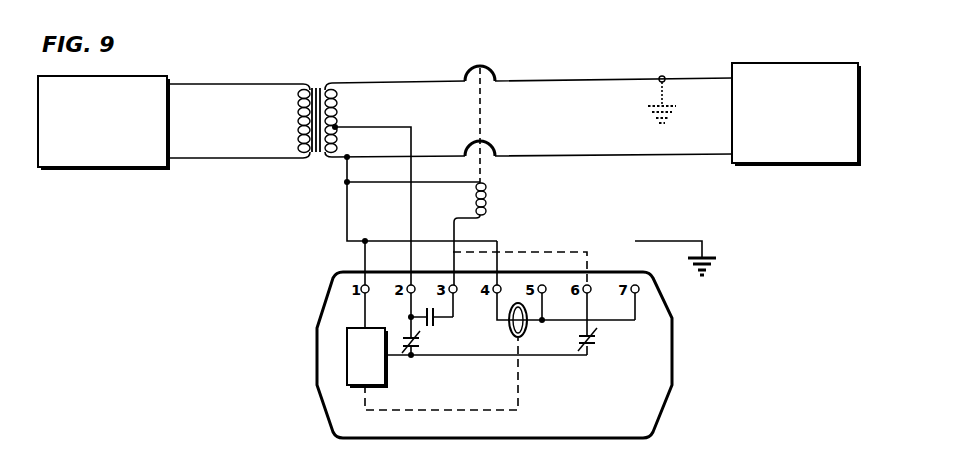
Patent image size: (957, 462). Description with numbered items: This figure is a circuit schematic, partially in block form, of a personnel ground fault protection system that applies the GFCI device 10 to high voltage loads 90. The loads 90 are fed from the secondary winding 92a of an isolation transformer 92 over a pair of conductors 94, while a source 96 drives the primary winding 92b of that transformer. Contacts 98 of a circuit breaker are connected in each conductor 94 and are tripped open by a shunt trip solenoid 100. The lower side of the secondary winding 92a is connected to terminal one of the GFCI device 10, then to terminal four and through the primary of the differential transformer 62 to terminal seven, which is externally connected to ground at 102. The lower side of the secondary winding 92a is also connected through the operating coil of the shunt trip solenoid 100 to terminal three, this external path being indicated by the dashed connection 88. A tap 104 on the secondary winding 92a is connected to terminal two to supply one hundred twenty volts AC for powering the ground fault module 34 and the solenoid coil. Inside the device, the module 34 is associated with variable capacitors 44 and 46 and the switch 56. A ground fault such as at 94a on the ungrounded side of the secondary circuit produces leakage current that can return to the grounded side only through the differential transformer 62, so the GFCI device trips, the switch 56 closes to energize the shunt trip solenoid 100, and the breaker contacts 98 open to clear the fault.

The GFCI device 10 is at (680, 342).
The ground fault module 34 is at (346, 352).
The variable capacitor 44 is at (404, 337).
The variable capacitor 46 is at (598, 340).
The switch 56 is at (433, 327).
The differential transformer 62 is at (528, 330).
The dashed connection 88 is at (527, 252).
The high voltage loads 90 is at (786, 63).
The isolation transformer 92 is at (320, 104).
The secondary winding 92a is at (337, 107).
The primary winding 92b is at (299, 106).
The conductors 94 is at (568, 81).
The ground fault 94a is at (678, 112).
The source 96 is at (125, 76).
The circuit breaker contacts 98 is at (469, 71).
The shunt trip solenoid 100 is at (487, 192).
The ground 102 is at (710, 258).
The tap 104 is at (338, 130).